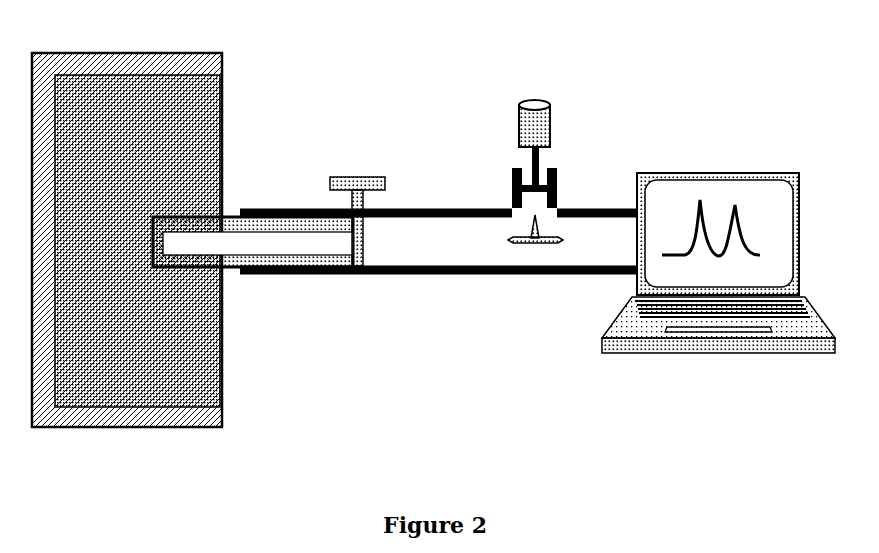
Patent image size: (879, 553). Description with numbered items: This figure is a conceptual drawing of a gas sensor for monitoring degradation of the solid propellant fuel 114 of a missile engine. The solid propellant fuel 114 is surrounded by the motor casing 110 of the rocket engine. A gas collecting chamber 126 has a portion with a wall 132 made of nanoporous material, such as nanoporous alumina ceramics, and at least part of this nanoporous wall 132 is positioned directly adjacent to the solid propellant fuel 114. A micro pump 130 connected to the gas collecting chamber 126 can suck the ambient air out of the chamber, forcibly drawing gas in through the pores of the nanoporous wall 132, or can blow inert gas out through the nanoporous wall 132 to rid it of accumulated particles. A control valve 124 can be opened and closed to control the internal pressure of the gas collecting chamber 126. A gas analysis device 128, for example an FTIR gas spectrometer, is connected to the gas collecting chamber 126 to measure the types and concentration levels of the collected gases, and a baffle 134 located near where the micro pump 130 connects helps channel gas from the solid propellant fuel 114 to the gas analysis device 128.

The motor casing 110 is at (100, 420).
The solid propellant fuel 114 is at (121, 115).
The control valve 124 is at (373, 185).
The gas collecting chamber 126 is at (433, 254).
The gas analysis device 128 is at (758, 320).
The micro pump 130 is at (551, 126).
The nanoporous wall 132 is at (316, 226).
The baffle 134 is at (533, 248).